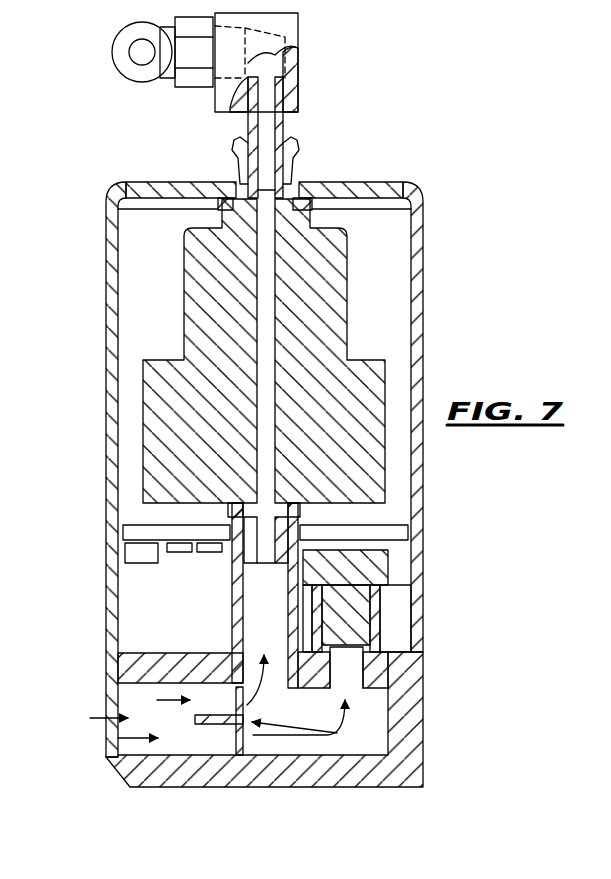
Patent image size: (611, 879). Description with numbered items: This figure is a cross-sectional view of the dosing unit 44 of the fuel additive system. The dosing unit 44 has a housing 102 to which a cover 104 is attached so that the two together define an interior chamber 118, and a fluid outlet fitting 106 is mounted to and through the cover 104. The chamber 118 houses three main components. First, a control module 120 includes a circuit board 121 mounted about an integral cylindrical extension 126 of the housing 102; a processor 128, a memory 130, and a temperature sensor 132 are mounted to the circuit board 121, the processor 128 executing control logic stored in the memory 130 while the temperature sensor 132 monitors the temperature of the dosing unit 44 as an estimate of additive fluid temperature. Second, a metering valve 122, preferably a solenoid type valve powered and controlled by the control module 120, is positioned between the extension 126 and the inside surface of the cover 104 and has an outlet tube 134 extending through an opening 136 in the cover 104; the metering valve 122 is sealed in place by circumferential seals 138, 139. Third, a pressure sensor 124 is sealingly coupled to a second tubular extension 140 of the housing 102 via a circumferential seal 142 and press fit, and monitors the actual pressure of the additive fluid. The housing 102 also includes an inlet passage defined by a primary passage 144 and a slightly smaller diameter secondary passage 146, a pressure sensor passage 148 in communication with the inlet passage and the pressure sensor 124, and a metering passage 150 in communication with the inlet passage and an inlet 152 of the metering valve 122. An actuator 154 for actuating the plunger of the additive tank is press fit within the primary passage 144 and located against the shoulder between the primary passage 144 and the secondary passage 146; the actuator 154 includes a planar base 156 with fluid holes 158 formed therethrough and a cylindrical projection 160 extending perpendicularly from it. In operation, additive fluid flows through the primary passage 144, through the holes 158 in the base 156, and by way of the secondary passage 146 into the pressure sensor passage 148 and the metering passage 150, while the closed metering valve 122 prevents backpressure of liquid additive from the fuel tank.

The dosing unit 44 is at (408, 155).
The housing 102 is at (424, 293).
The cover 104 is at (418, 192).
The fluid outlet fitting 106 is at (193, 82).
The interior chamber 118 is at (367, 248).
The control module 120 is at (400, 524).
The circuit board 121 is at (395, 535).
The metering valve 122 is at (360, 341).
The pressure sensor 124 is at (396, 572).
The cylindrical extension 126 is at (258, 640).
The processor 128 is at (210, 553).
The memory 130 is at (178, 552).
The temperature sensor 132 is at (143, 556).
The outlet tube 134 is at (284, 125).
The opening 136 is at (262, 176).
The circumferential seal 138 is at (225, 198).
The circumferential seal 139 is at (228, 510).
The second tubular extension 140 is at (380, 594).
The circumferential seal 142 is at (325, 607).
The primary passage 144 is at (106, 752).
The secondary passage 146 is at (373, 738).
The pressure sensor passage 148 is at (352, 672).
The metering passage 150 is at (256, 658).
The inlet 152 is at (255, 610).
The actuator 154 is at (348, 668).
The planar base 156 is at (243, 742).
The fluid holes 158 is at (223, 720).
The cylindrical projection 160 is at (238, 700).